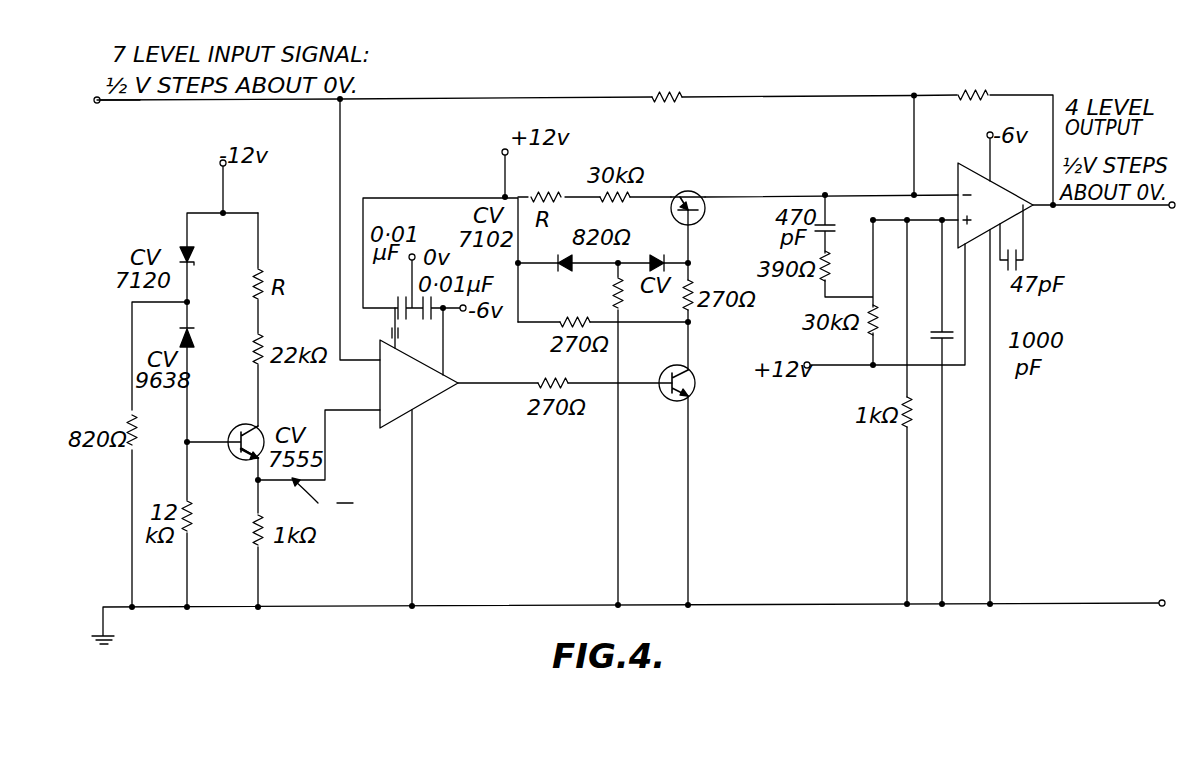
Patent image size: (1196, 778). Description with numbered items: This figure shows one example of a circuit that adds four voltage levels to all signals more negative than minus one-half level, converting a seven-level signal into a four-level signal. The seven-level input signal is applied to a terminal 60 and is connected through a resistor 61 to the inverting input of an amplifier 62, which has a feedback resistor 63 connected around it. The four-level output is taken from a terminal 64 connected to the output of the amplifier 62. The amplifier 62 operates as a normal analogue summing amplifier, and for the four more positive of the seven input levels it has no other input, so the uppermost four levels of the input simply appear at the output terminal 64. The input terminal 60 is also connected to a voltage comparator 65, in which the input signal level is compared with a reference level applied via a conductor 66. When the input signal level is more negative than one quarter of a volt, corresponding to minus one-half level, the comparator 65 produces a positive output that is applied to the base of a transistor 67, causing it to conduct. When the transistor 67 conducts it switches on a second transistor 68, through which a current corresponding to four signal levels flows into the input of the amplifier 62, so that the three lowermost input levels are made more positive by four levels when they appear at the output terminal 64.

The terminal 60 is at (100, 103).
The resistor 61 is at (668, 101).
The amplifier 62 is at (1027, 196).
The feedback resistor 63 is at (970, 98).
The terminal 64 is at (1172, 208).
The voltage comparator 65 is at (446, 402).
The conductor 66 is at (327, 428).
The transistor 67 is at (668, 400).
The second transistor 68 is at (703, 218).